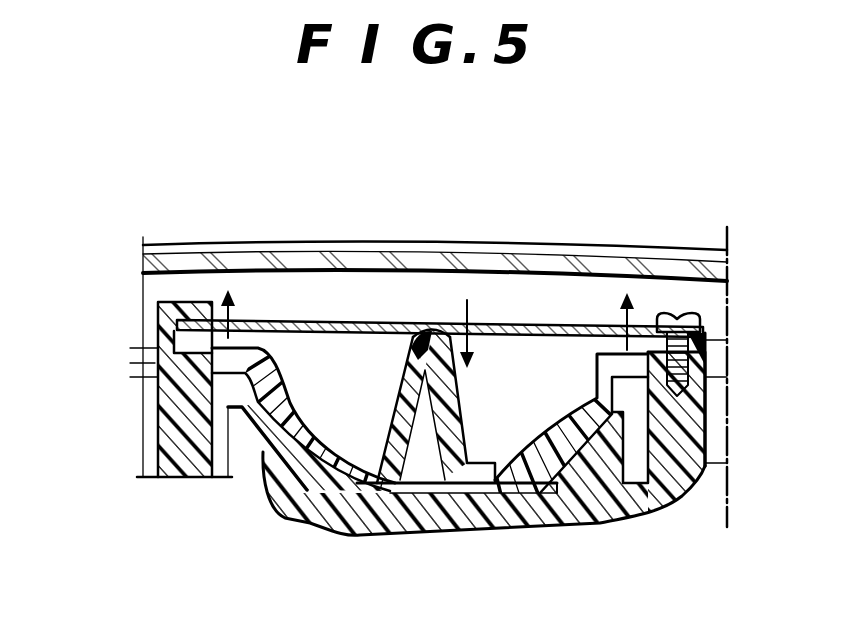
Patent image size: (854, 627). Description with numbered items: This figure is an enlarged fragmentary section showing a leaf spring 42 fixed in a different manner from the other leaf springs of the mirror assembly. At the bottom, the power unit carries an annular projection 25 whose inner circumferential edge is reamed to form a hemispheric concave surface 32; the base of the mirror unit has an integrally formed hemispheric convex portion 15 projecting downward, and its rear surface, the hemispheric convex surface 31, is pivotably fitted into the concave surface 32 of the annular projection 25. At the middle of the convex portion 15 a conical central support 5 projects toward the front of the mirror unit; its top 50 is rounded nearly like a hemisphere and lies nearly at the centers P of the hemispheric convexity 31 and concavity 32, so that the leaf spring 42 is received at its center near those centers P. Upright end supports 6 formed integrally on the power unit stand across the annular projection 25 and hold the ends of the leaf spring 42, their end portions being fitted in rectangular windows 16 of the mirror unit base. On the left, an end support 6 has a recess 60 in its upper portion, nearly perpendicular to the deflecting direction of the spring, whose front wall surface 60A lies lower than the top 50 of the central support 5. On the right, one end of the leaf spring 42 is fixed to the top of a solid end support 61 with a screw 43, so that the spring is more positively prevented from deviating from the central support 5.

The central support 5 is at (402, 372).
The end support 6 is at (161, 302).
The hemispheric convex portion 15 is at (430, 320).
The rectangular window 16 is at (140, 363).
The annular projection 25 is at (600, 460).
The hemispheric convex surface 31 is at (267, 432).
The hemispheric concave surface 32 is at (297, 400).
The leaf spring 42 is at (707, 337).
The screw 43 is at (675, 313).
The top of the central support 50 is at (393, 295).
The center of the hemispheric convexity and concavity P is at (393, 295).
The recess 60 is at (135, 287).
The front wall surface 60A is at (193, 318).
The solid end support 61 is at (700, 413).